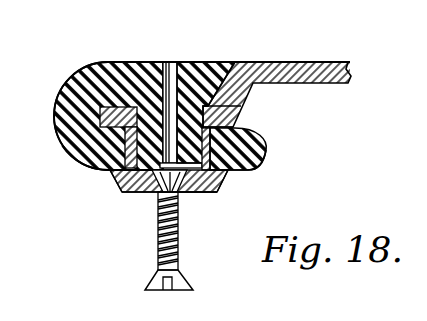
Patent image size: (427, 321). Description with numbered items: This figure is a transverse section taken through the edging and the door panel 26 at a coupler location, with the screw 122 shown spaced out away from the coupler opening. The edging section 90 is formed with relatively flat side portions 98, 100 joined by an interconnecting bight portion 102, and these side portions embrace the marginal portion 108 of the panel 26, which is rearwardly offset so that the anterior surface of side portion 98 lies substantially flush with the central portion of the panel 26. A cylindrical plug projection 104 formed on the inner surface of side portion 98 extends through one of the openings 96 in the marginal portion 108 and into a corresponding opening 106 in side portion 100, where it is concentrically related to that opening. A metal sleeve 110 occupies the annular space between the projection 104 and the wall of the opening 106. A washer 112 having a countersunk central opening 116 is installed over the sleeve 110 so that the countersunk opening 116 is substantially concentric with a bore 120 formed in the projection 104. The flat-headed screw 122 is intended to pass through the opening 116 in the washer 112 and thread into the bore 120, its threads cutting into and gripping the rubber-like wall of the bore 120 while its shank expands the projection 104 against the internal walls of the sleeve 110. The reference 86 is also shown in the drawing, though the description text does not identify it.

The panel 26 is at (305, 63).
The slot channel 86 is at (169, 64).
The edging section 90 is at (133, 64).
The openings 96 is at (242, 112).
The side portion 98 is at (200, 72).
The side portion 100 is at (260, 170).
The bight portion 102 is at (62, 108).
The plug projections 104 is at (110, 174).
The openings 106 is at (265, 143).
The marginal portion 108 is at (80, 150).
The metal sleeve 110 is at (228, 178).
The washer 112 is at (217, 187).
The countersunk central opening 116 is at (186, 193).
The bore 120 is at (140, 176).
The flat-headed screw 122 is at (181, 248).